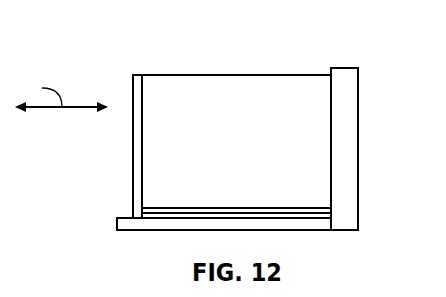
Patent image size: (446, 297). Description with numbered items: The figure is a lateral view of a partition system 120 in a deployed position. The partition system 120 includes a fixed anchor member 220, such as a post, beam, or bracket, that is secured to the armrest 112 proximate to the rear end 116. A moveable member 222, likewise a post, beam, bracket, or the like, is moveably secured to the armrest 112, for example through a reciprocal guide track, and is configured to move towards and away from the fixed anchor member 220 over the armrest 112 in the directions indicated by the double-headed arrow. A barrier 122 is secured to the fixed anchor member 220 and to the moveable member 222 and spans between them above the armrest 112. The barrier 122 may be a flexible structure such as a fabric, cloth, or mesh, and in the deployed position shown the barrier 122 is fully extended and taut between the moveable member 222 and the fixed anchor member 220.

The partition system 120 is at (175, 49).
The barrier 122 is at (235, 88).
The moveable member 222 is at (133, 148).
The fixed anchor member 220 is at (345, 133).
The rear end 116 is at (326, 226).
The armrest 112 is at (320, 231).